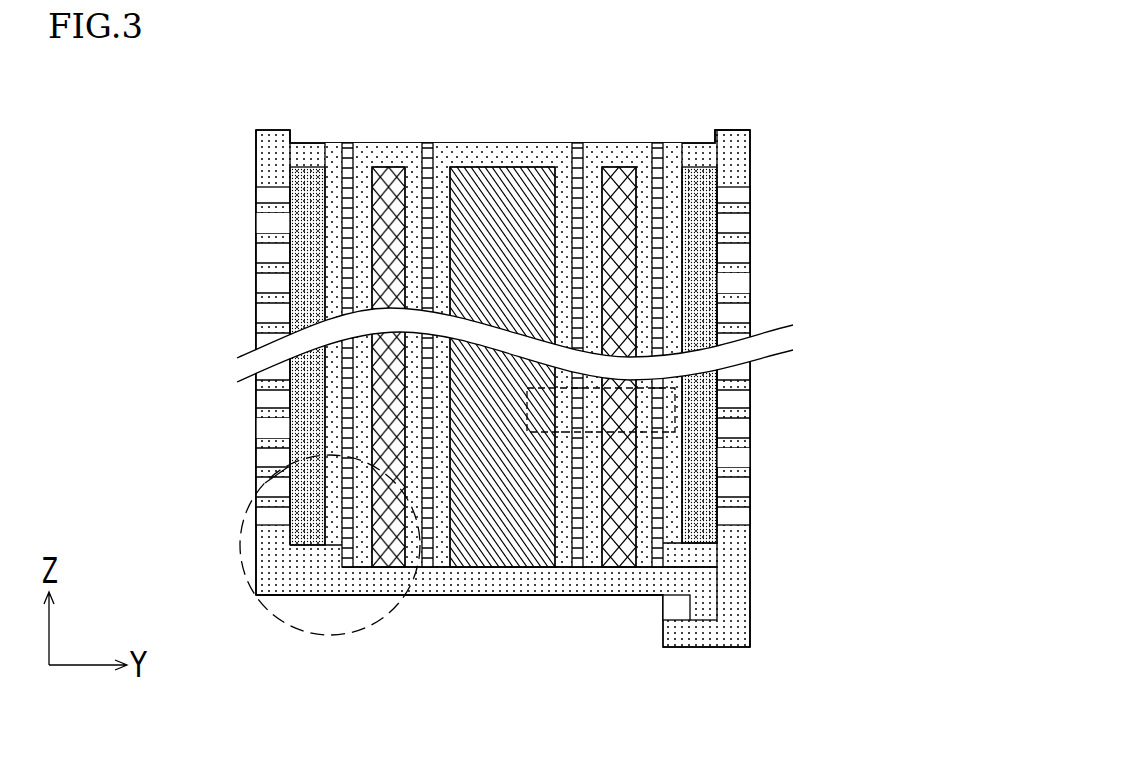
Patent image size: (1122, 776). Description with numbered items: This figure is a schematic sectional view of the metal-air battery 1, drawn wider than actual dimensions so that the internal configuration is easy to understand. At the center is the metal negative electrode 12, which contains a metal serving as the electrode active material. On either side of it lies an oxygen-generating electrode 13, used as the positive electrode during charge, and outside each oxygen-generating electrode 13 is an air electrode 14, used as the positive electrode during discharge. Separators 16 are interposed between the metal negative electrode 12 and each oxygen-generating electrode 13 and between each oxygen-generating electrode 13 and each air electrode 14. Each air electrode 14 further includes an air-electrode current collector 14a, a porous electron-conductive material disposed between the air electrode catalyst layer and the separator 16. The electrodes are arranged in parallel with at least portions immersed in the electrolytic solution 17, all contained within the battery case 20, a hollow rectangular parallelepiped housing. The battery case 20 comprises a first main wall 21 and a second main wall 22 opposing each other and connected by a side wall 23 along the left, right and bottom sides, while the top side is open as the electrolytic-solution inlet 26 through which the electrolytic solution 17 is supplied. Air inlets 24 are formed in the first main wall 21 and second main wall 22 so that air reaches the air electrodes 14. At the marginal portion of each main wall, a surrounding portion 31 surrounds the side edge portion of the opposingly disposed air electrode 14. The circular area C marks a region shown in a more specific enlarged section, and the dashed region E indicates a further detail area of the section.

The metal-air battery 1 is at (152, 75).
The metal negative electrode 12 is at (513, 173).
The oxygen-generating electrode 13 is at (390, 173).
The air electrode 14 is at (297, 227).
The air-electrode current collector 14a is at (682, 253).
The separator 16 is at (348, 147).
The electrolytic solution 17 is at (475, 147).
The battery case 20 is at (767, 507).
The first main wall 21 is at (258, 532).
The second main wall 22 is at (752, 547).
The side wall 23 is at (505, 587).
The air inlets 24 is at (263, 285).
The electrolytic-solution inlet 26 is at (707, 130).
The surrounding portion 31 is at (308, 155).
The circular area C is at (400, 597).
The region E is at (675, 413).